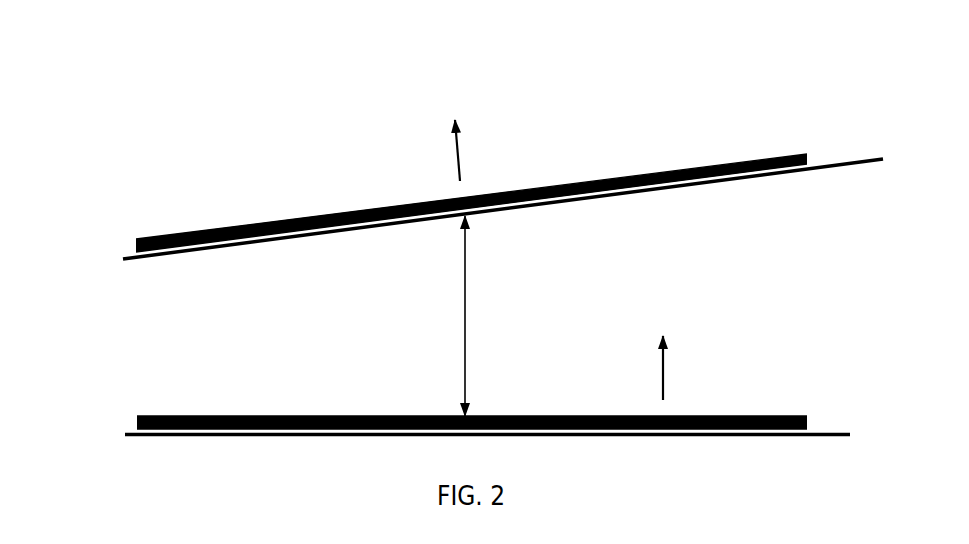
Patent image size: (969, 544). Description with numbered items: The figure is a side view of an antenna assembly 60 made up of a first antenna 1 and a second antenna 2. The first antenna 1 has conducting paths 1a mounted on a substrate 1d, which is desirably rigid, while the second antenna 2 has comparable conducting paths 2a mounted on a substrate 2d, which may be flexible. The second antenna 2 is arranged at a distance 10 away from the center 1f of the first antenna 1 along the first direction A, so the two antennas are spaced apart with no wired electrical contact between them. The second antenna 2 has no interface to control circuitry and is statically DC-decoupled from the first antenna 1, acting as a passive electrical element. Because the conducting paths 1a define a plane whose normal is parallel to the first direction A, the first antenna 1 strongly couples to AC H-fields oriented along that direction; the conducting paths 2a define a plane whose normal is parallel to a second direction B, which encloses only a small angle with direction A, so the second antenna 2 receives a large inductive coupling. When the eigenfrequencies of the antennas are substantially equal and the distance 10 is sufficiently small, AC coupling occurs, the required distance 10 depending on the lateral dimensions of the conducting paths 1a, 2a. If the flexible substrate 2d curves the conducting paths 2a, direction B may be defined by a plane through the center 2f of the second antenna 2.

The antenna assembly 60 is at (102, 92).
The first antenna 1 is at (473, 388).
The conducting paths of the first antenna 1a is at (279, 416).
The center of the first antenna 1f is at (462, 414).
The substrate of the first antenna 1d is at (828, 435).
The second antenna 2 is at (482, 177).
The conducting paths of the second antenna 2a is at (300, 218).
The center of the second antenna 2f is at (462, 198).
The substrate of the second antenna 2d is at (828, 167).
The distance 10 is at (467, 290).